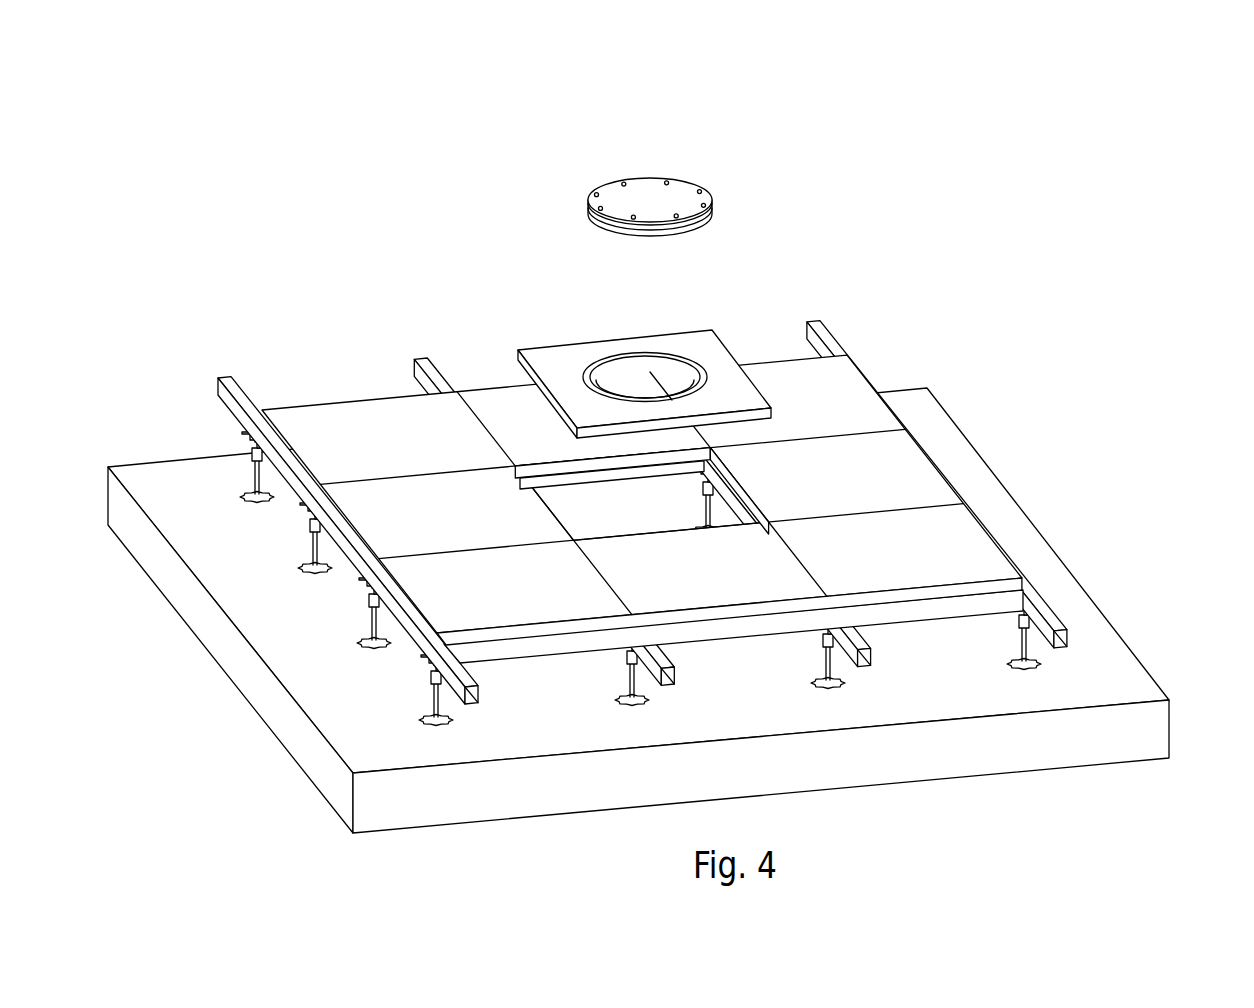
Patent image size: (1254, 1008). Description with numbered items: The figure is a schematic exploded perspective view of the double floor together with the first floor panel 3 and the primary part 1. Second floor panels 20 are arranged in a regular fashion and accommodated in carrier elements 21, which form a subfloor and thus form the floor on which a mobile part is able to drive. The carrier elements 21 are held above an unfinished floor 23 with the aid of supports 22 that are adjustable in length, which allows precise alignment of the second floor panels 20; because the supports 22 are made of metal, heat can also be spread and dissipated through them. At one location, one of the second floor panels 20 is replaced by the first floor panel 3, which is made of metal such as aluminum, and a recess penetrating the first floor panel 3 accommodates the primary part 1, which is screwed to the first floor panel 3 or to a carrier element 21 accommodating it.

The primary part 1 is at (667, 192).
The first floor panel 3 is at (700, 345).
The second floor panels 20 is at (820, 405).
The carrier elements 21 is at (440, 378).
The supports 22 is at (1026, 632).
The unfinished floor 23 is at (952, 458).